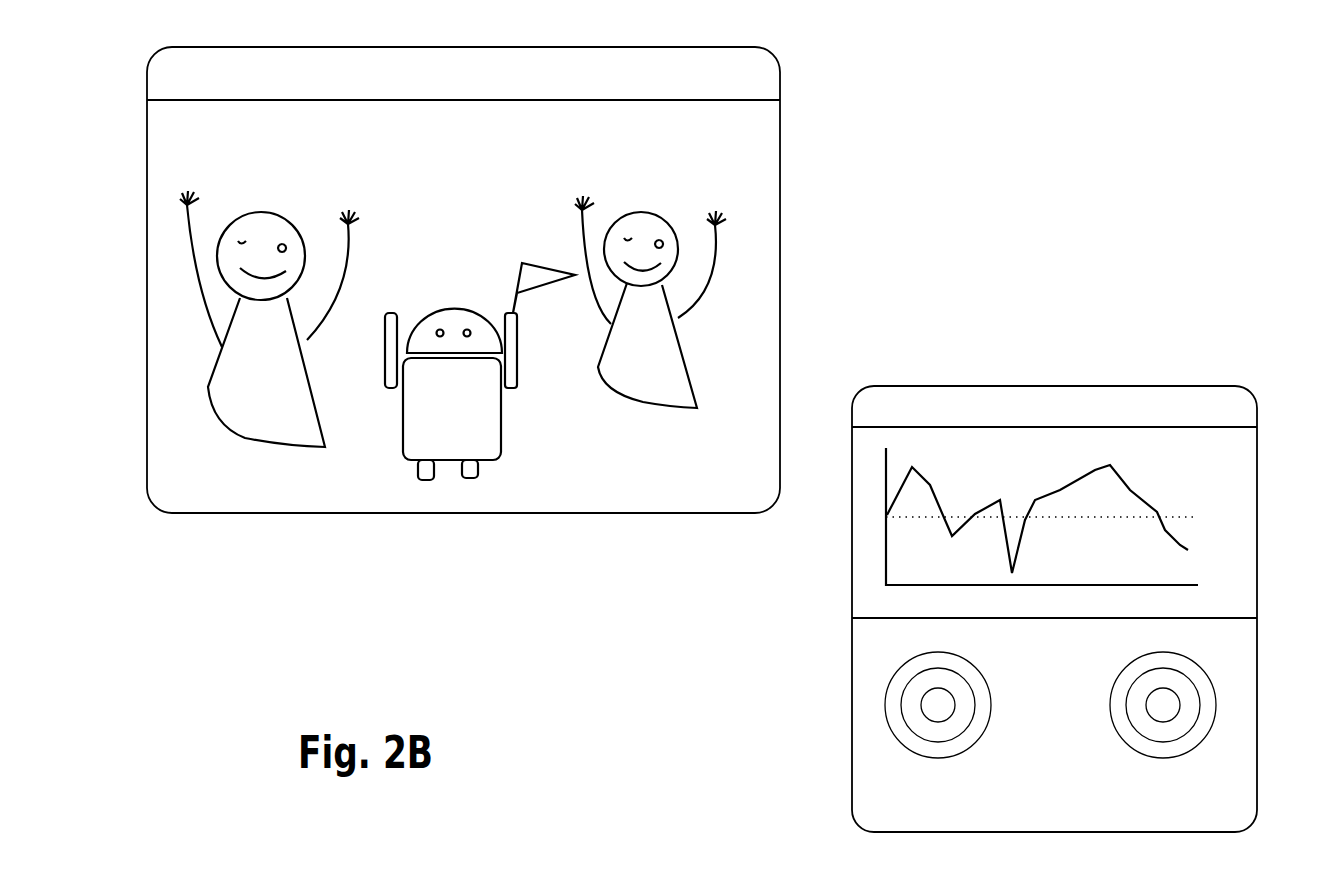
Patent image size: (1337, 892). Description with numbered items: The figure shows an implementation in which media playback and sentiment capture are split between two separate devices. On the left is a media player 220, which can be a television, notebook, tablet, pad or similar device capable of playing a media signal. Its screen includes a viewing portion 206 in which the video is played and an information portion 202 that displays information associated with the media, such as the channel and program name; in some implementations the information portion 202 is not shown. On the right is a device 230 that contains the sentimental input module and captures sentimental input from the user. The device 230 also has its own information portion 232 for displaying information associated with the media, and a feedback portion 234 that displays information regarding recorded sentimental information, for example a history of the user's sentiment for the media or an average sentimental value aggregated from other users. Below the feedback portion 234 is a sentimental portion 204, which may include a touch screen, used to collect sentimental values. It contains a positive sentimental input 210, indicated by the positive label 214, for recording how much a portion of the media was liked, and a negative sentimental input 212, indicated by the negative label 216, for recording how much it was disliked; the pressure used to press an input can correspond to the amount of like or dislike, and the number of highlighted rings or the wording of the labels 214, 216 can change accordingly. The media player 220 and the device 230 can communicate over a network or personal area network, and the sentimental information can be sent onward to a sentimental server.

The information portion 202 is at (780, 78).
The media player 220 is at (552, 47).
The viewing portion 206 is at (780, 185).
The information portion 232 is at (1257, 410).
The device 230 is at (1140, 388).
The feedback portion 234 is at (1257, 513).
The sentimental portion 204 is at (1089, 725).
The positive sentimental input 210 is at (978, 669).
The negative sentimental input 212 is at (1128, 665).
The positive label 214 is at (986, 785).
The negative label 216 is at (1130, 778).